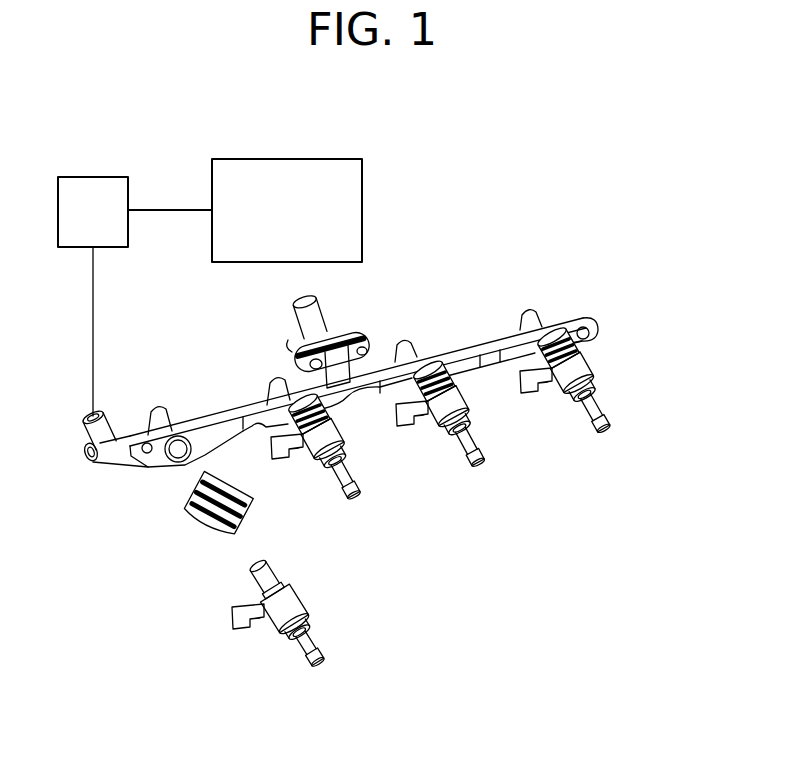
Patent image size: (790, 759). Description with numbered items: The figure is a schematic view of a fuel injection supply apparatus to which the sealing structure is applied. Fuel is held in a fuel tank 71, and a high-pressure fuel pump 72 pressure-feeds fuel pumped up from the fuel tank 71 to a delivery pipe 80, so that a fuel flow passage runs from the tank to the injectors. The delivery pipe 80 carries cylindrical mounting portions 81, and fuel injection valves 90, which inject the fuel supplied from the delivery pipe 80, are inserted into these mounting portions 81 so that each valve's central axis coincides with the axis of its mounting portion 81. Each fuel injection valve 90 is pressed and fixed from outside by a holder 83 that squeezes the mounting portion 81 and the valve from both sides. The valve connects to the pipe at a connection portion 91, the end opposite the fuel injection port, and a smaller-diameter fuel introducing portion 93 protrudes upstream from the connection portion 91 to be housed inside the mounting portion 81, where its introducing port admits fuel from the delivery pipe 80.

The fuel tank 71 is at (286, 159).
The high-pressure fuel pump 72 is at (98, 177).
The delivery pipe 80 is at (356, 353).
The mounting portion 81 is at (157, 404).
The holder 83 is at (238, 496).
The fuel injection valve 90 is at (435, 511).
The connection portion 91 is at (300, 579).
The fuel introducing portion 93 is at (231, 578).